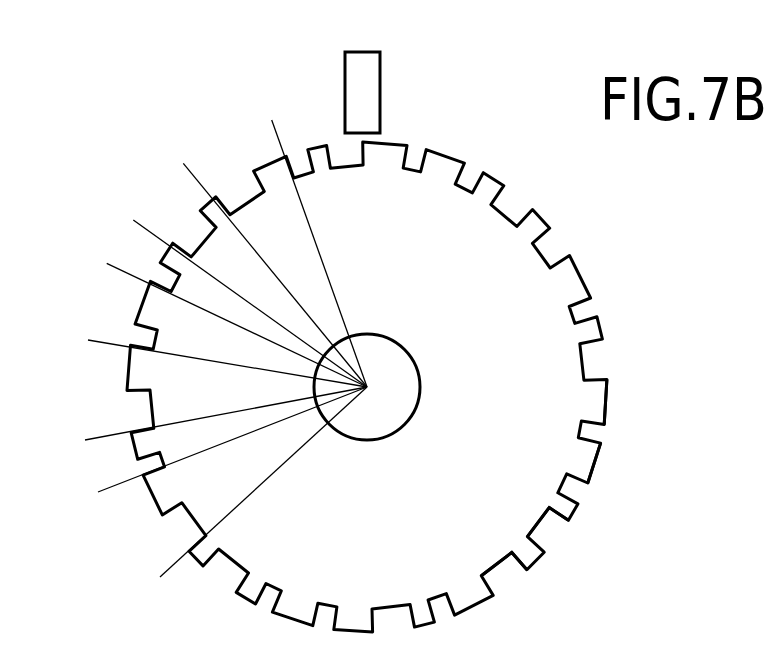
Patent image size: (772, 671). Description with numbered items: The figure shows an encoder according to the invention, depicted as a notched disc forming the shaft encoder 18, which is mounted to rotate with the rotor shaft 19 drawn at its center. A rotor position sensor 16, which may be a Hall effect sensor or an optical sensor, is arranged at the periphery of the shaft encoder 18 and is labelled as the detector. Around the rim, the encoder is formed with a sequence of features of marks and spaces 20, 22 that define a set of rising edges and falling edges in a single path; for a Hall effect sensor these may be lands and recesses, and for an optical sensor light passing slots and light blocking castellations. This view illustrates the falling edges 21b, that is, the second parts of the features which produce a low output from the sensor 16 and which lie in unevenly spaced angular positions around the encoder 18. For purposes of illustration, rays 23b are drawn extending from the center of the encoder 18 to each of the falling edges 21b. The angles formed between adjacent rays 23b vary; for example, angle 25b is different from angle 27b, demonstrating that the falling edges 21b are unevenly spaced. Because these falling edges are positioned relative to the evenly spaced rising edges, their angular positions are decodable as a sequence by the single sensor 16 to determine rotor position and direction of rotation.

The rotor position sensor 16 is at (358, 72).
The shaft encoder 18 is at (522, 333).
The rotor shaft 19 is at (394, 362).
The marks 20 is at (583, 470).
The falling edges 21b is at (287, 176).
The spaces 22 is at (495, 575).
The rays 23b is at (279, 466).
The angle 25b is at (214, 502).
The angle 27b is at (212, 503).